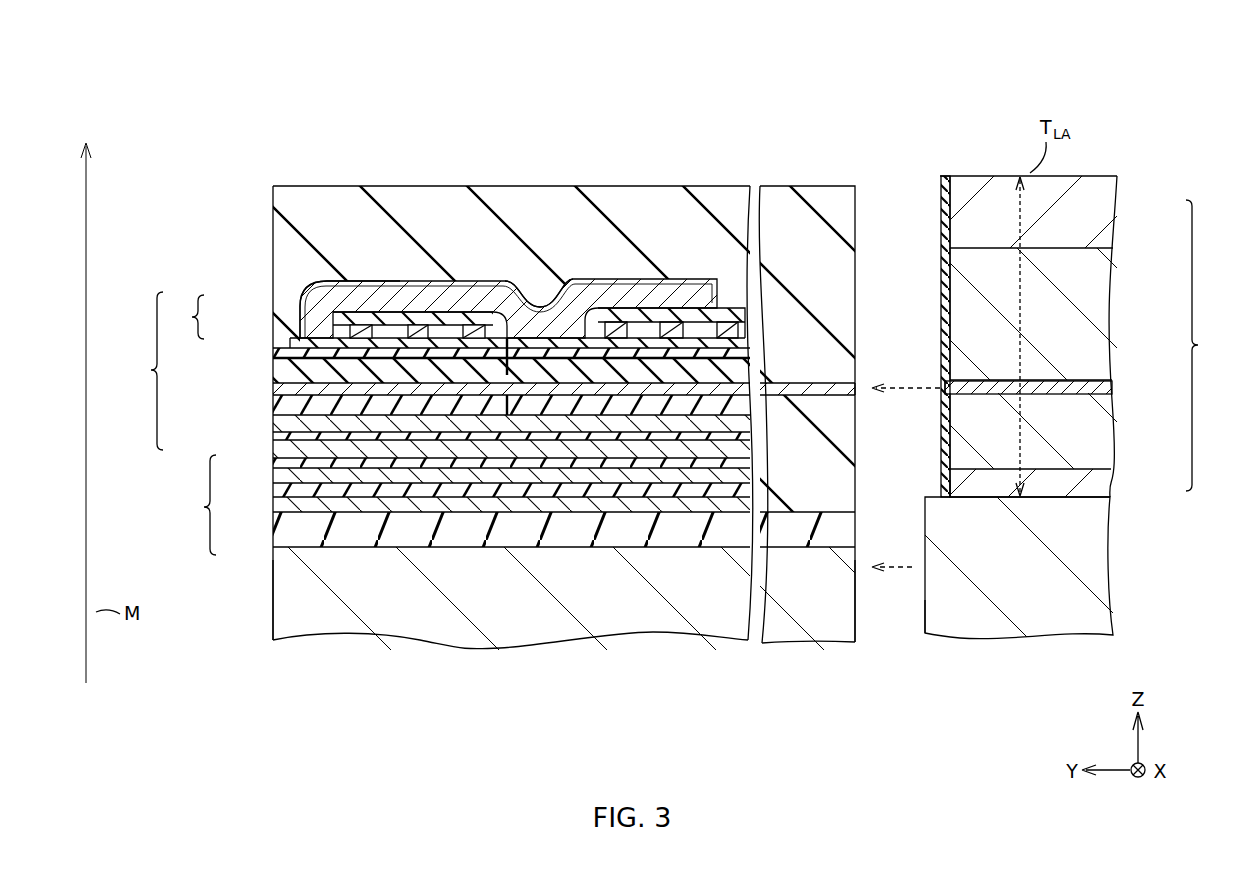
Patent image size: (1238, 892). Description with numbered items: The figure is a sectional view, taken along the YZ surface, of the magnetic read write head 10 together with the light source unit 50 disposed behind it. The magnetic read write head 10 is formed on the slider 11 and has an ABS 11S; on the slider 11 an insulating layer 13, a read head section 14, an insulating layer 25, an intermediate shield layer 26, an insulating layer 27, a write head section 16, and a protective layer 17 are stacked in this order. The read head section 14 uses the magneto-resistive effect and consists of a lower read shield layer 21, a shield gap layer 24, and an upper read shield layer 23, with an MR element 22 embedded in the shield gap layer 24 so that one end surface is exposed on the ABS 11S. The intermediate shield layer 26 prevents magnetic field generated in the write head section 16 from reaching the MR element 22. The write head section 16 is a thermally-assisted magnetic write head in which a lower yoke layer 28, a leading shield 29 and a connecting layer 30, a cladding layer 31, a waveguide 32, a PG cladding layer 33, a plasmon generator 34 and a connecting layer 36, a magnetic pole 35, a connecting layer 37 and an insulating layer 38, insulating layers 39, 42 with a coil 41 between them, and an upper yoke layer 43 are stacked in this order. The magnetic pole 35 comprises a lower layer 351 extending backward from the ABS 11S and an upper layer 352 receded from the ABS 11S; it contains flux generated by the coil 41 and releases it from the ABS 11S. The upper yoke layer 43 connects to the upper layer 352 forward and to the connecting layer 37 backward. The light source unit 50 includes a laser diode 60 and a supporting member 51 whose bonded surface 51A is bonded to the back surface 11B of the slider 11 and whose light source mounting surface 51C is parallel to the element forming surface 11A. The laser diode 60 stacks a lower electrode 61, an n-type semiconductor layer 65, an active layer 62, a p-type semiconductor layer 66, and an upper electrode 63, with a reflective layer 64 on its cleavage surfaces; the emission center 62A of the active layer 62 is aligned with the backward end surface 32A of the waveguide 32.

The magnetic read write head 10 is at (796, 99).
The slider 11 is at (412, 625).
The element forming surface 11A is at (340, 549).
The back surface 11B is at (866, 630).
The ABS 11S is at (270, 629).
The insulating layer 13 is at (700, 528).
The read head section 14 is at (195, 505).
The write head section 16 is at (141, 371).
The protective layer 17 is at (706, 188).
The lower read shield layer 21 is at (290, 530).
The MR element 22 is at (284, 505).
The upper read shield layer 23 is at (282, 488).
The shield gap layer 24 is at (278, 463).
The insulating layer 25 is at (460, 470).
The intermediate shield layer 26 is at (510, 416).
The insulating layer 27 is at (546, 355).
The lower yoke layer 28 is at (278, 436).
The leading shield 29 is at (278, 404).
The connecting layer 30 is at (512, 378).
The cladding layer 31 is at (612, 400).
The waveguide 32 is at (276, 389).
The backward end surface 32A is at (858, 387).
The PG cladding layer 33 is at (650, 412).
The plasmon generator 34 is at (276, 362).
The magnetic pole 35 is at (184, 317).
The lower layer 351 is at (276, 338).
The upper layer 352 is at (276, 321).
The connecting layer 36 is at (543, 302).
The connecting layer 37 is at (592, 314).
The insulating layer 38 is at (470, 324).
The insulating layer 39 is at (355, 324).
The coil 41 is at (398, 312).
The insulating layer 42 is at (432, 324).
The upper yoke layer 43 is at (320, 294).
The light source unit 50 is at (1120, 99).
The supporting member 51 is at (1116, 549).
The bonded surface 51A is at (921, 623).
The light source mounting surface 51C is at (945, 492).
The laser diode 60 is at (1205, 345).
The lower electrode 61 is at (1116, 487).
The active layer 62 is at (1116, 388).
The emission center 62A is at (946, 397).
The upper electrode 63 is at (1120, 212).
The reflective layer 64 is at (940, 212).
The n-type semiconductor layer 65 is at (1116, 437).
The p-type semiconductor layer 66 is at (1116, 320).